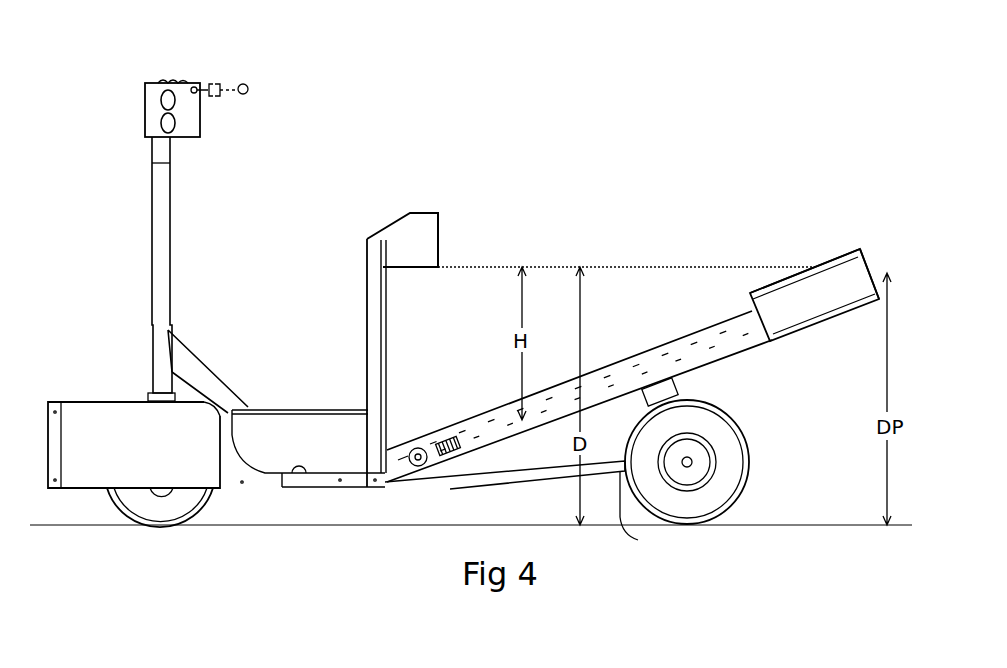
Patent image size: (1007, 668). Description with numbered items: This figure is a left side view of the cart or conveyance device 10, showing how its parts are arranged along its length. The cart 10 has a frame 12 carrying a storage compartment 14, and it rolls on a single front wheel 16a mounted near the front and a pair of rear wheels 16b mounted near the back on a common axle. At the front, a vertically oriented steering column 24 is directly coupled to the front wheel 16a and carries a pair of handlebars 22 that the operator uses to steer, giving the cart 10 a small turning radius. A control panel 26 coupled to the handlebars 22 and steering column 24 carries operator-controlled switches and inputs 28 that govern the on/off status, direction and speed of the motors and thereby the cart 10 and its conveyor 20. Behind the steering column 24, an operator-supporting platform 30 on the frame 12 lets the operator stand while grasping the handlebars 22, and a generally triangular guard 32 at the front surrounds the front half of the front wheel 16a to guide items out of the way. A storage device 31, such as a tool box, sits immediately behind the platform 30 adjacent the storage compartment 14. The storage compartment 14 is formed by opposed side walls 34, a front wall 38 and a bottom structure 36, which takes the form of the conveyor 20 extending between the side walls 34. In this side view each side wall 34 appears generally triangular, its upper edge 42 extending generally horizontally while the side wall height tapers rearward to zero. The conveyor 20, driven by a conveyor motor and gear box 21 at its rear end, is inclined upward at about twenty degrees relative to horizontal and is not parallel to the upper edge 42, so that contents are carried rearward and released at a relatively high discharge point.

The cart or conveyance device 10 is at (597, 141).
The frame 12 is at (640, 538).
The storage compartment 14 is at (680, 282).
The front wheel 16a is at (178, 512).
The rear wheels 16b is at (740, 500).
The conveyor 20 is at (658, 345).
The conveyor motor and gear box 21 is at (828, 276).
The handlebars 22 is at (240, 84).
The steering column 24 is at (152, 232).
The control panel 26 is at (149, 83).
The operator-controlled switches and/or inputs 28 is at (181, 66).
The operator-supporting surface or platform 30 is at (290, 478).
The storage device 31 is at (416, 232).
The guard 32 is at (85, 420).
The side walls 34 is at (461, 282).
The bottom structure 36 is at (786, 335).
The front wall 38 is at (380, 314).
The upper edge 42 is at (735, 267).